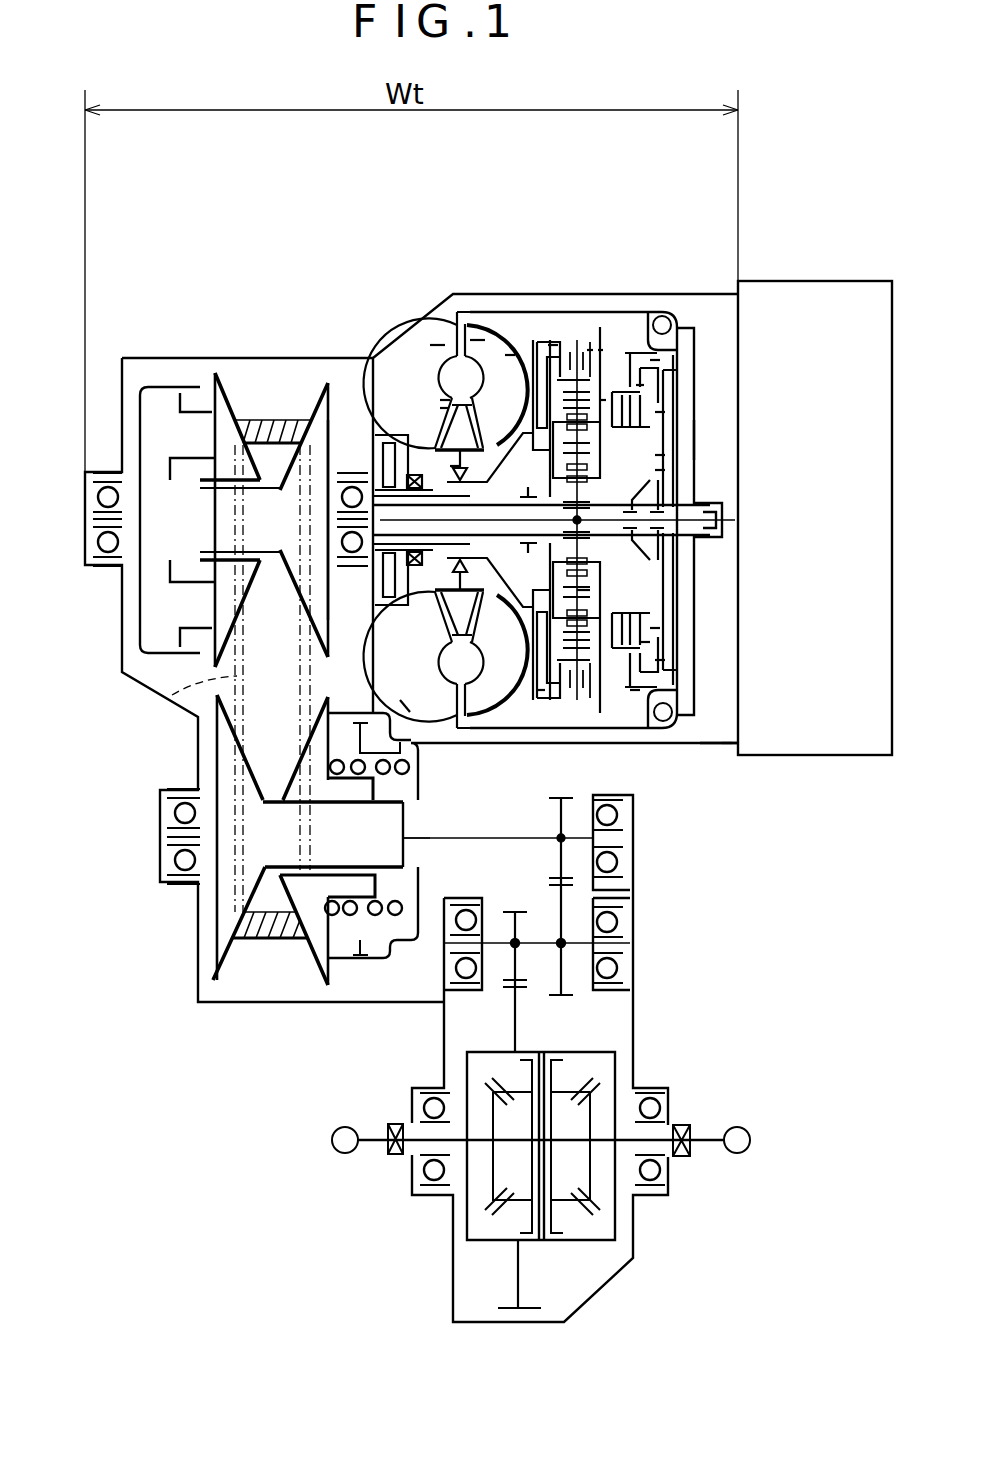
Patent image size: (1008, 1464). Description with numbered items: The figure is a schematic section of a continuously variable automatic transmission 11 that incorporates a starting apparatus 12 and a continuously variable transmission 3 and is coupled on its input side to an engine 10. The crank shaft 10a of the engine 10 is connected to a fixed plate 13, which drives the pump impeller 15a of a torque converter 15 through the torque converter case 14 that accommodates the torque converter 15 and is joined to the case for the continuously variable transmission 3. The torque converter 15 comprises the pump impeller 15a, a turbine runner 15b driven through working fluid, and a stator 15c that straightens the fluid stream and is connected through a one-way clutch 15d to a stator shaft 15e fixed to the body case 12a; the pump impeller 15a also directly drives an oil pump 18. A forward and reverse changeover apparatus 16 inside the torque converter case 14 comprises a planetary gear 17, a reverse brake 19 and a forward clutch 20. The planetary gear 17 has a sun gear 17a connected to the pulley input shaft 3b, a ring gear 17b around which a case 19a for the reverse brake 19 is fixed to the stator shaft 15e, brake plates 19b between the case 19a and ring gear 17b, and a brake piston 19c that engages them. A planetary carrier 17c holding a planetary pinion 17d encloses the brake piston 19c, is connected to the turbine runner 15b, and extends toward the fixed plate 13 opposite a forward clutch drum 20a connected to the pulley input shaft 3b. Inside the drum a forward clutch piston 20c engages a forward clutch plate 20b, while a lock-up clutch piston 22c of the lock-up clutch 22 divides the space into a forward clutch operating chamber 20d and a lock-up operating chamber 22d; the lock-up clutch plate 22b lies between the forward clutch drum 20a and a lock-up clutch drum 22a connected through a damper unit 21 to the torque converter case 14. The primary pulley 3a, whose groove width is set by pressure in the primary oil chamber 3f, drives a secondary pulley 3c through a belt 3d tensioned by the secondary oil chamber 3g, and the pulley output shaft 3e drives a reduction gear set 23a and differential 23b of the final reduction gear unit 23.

The continuously variable transmission 3 is at (133, 345).
The primary pulley 3a is at (318, 395).
The pulley input shaft 3b is at (602, 614).
The secondary pulley 3c is at (198, 930).
The belt 3d is at (172, 695).
The pulley output shaft 3e is at (478, 838).
The primary oil chamber 3f is at (163, 400).
The secondary oil chamber 3g is at (381, 947).
The engine 10 is at (819, 266).
The crank shaft 10a is at (728, 537).
The continuously variable automatic transmission 11 is at (446, 203).
The starting apparatus 12 is at (716, 281).
The body case 12a is at (693, 745).
The fixed plate 13 is at (696, 437).
The torque converter case 14 is at (605, 400).
The torque converter 15 is at (454, 732).
The pump impeller 15a is at (440, 345).
The turbine runner 15b is at (508, 357).
The stator 15c is at (478, 340).
The one-way clutch 15d is at (400, 702).
The stator shaft 15e is at (445, 410).
The forward and reverse changeover apparatus 16 is at (542, 890).
The planetary gear 17 is at (622, 476).
The sun gear 17a is at (592, 598).
The ring gear 17b is at (600, 362).
The planetary carrier 17c is at (553, 345).
The planetary pinion 17d is at (660, 455).
The oil pump 18 is at (385, 580).
The reverse brake 19 is at (541, 702).
The case 19a is at (455, 468).
The brake plates 19b is at (590, 350).
The brake piston 19c is at (447, 405).
The forward clutch 20 is at (609, 690).
The forward clutch drum 20a is at (640, 385).
The forward clutch plate 20b is at (660, 660).
The forward clutch piston 20c is at (645, 642).
The forward clutch operating chamber 20d is at (660, 470).
The damper unit 21 is at (672, 328).
The lock-up clutch 22 is at (639, 705).
The lock-up clutch drum 22a is at (728, 745).
The lock-up clutch plate 22b is at (655, 360).
The lock-up clutch piston 22c is at (660, 412).
The lock-up operating chamber 22d is at (655, 628).
The final reduction gear unit 23 is at (372, 1146).
The reduction gear set 23a is at (580, 908).
The differential 23b is at (587, 1240).